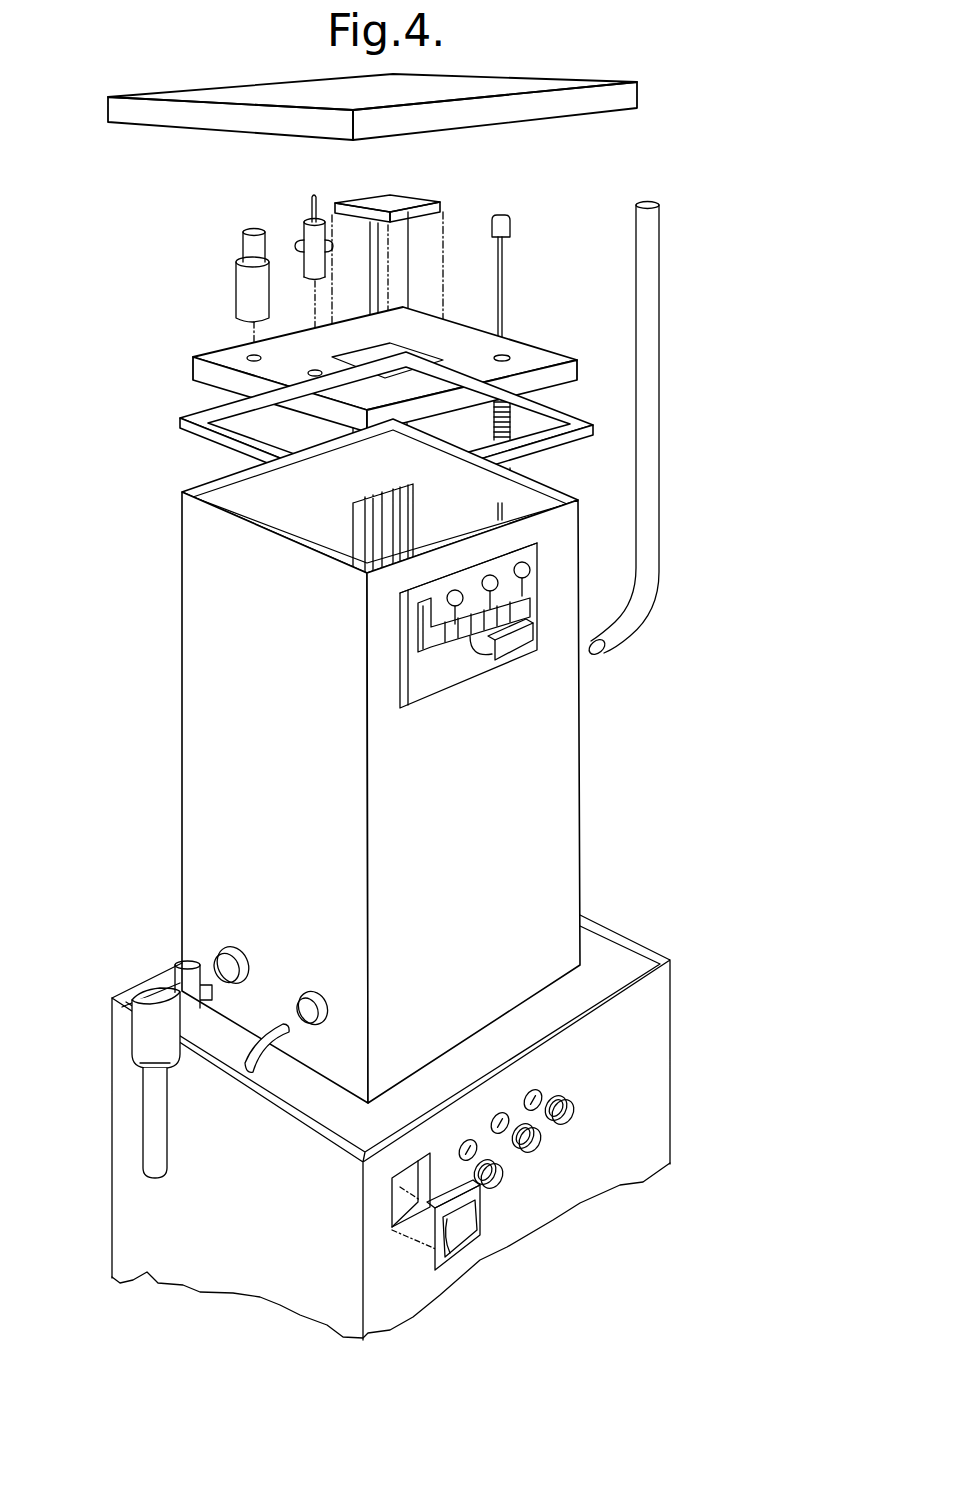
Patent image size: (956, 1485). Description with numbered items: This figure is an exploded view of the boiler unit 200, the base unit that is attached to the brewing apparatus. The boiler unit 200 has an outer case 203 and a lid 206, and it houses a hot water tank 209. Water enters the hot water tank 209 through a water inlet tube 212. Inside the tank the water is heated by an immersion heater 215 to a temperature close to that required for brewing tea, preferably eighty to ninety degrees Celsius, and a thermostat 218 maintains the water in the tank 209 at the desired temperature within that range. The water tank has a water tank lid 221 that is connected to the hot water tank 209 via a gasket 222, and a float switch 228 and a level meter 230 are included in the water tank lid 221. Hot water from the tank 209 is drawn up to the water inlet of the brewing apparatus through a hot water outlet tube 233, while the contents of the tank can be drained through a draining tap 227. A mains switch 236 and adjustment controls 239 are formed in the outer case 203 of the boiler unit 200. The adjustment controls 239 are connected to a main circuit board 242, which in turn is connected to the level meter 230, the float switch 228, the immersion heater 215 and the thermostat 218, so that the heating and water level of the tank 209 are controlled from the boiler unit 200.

The boiler unit 200 is at (158, 794).
The outer case 203 is at (648, 1008).
The lid 206 is at (143, 112).
The hot water tank 209 is at (213, 590).
The water inlet tube 212 is at (150, 1097).
The immersion heater 215 is at (407, 250).
The thermostat 218 is at (505, 288).
The water tank lid 221 is at (198, 370).
The gasket 222 is at (188, 427).
The draining tap 227 is at (247, 1060).
The float switch 228 is at (246, 283).
The level meter 230 is at (306, 221).
The hot water outlet tube 233 is at (649, 432).
The mains switch 236 is at (460, 1235).
The adjustment controls 239 is at (573, 1108).
The main circuit board 242 is at (533, 588).